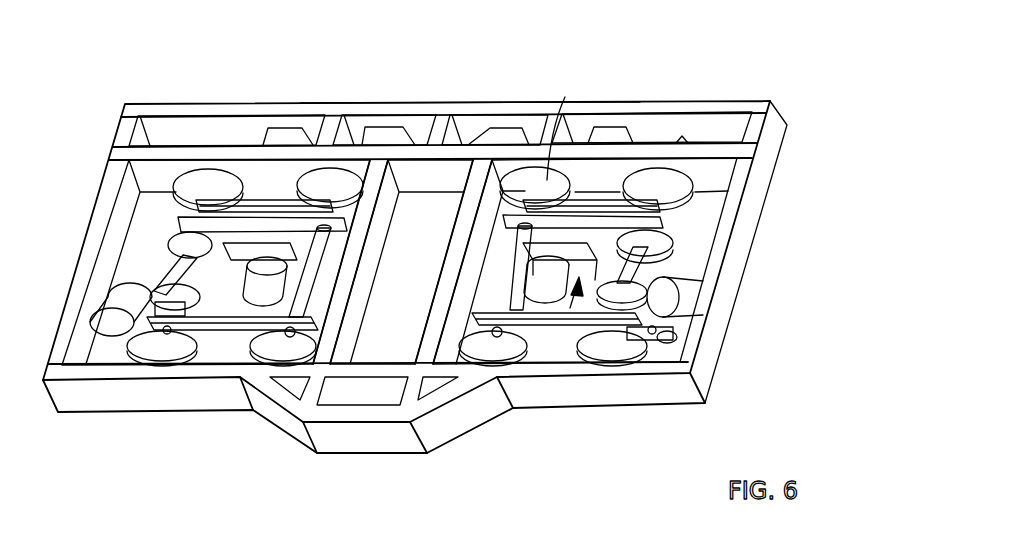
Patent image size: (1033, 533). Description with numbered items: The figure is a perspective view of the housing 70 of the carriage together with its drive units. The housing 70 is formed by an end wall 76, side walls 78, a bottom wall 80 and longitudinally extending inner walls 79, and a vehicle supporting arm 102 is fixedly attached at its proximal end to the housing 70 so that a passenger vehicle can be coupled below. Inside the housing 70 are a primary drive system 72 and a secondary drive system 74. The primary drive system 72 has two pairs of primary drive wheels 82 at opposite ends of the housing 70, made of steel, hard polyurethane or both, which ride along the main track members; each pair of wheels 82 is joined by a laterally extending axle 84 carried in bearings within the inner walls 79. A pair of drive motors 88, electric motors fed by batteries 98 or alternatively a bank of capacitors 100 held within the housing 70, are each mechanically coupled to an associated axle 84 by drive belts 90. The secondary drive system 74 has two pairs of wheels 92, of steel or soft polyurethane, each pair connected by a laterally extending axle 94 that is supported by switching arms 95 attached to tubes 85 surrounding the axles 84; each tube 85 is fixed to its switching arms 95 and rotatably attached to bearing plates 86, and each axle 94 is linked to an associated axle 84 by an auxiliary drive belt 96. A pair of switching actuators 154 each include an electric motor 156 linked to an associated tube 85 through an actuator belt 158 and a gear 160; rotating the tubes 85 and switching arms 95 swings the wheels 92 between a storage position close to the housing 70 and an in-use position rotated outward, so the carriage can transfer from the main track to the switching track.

The housing 70 is at (782, 110).
The primary drive system 72 is at (211, 147).
The secondary drive system 74 is at (331, 147).
The end wall 76 is at (790, 128).
The side walls 78 is at (462, 102).
The longitudinally extending inner walls 79 is at (605, 136).
The bottom wall 80 is at (137, 272).
The primary drive wheels 82 is at (672, 170).
The axles 84 is at (657, 200).
The tubes 85 is at (683, 305).
The bearing plates 86 is at (668, 243).
The drive motors 88 is at (690, 325).
The drive belts 90 is at (648, 345).
The wheels 92 is at (565, 127).
The axle 94 is at (490, 335).
The switching arms 95 is at (665, 216).
The auxiliary drive belt 96 is at (622, 168).
The batteries 98 is at (286, 133).
The bank of capacitors 100 is at (508, 128).
The vehicle supporting arm 102 is at (372, 395).
The switching actuators 154 is at (572, 320).
The electric motor 156 is at (547, 297).
The actuator belt 158 is at (680, 278).
The gear 160 is at (675, 255).